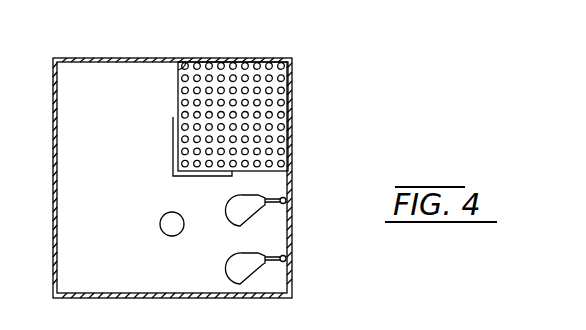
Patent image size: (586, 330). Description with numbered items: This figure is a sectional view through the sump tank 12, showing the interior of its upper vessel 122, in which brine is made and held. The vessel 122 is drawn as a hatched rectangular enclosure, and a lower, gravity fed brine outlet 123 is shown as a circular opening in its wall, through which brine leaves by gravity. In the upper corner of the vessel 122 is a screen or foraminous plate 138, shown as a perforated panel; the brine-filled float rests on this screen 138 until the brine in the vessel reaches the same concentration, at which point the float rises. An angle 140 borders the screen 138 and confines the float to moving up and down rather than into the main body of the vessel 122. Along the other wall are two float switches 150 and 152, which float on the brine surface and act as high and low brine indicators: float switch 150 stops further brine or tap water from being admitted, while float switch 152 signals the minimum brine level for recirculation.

The sump tank 12 is at (216, 157).
The upper vessel 122 is at (107, 57).
The gravity fed brine outlet 123 is at (161, 215).
The screen or foraminous plate 138 is at (282, 63).
The angle 140 is at (173, 149).
The float switch 150 is at (248, 212).
The float switch 152 is at (245, 270).